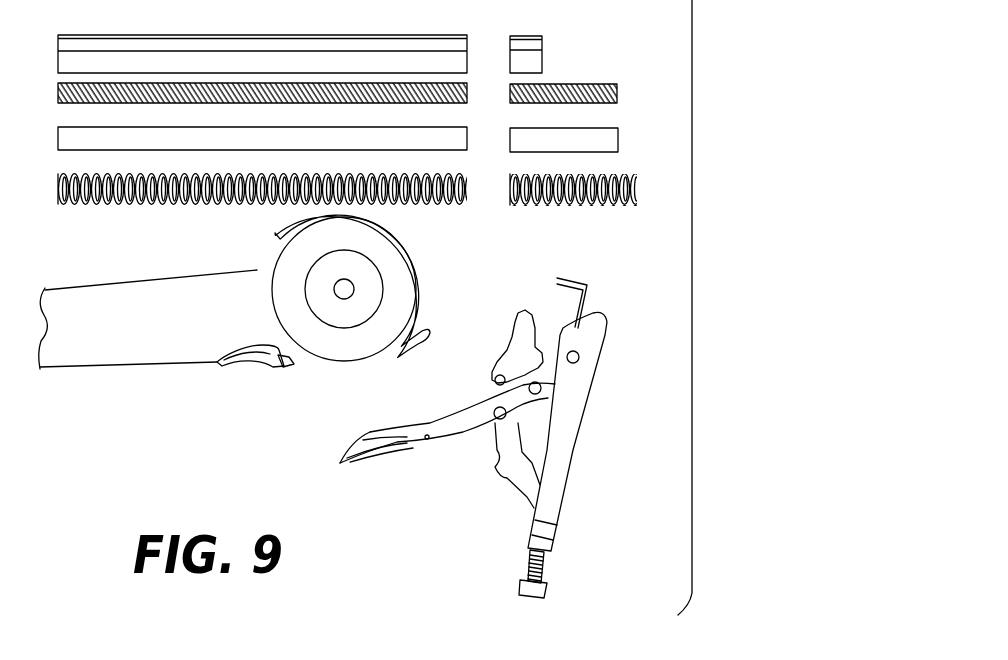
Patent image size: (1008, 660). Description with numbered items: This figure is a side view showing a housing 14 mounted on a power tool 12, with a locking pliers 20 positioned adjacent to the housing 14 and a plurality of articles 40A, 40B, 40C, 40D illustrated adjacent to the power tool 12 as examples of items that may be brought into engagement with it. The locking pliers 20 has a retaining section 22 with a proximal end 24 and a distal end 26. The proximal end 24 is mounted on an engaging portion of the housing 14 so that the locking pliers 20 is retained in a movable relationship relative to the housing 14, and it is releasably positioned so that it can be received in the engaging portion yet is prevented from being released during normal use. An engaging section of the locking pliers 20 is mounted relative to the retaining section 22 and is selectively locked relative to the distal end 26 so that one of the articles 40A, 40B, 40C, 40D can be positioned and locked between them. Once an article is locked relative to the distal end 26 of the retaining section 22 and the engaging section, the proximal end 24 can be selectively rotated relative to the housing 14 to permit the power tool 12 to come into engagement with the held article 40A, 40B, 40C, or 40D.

The power tool 12 is at (130, 343).
The housing 14 is at (323, 367).
The locking pliers 20 is at (503, 429).
The retaining section 22 is at (503, 357).
The proximal end 24 is at (490, 383).
The distal end 26 is at (520, 328).
The article 40A is at (637, 190).
The article 40B is at (647, 131).
The article 40C is at (537, 62).
The article 40D is at (643, 70).